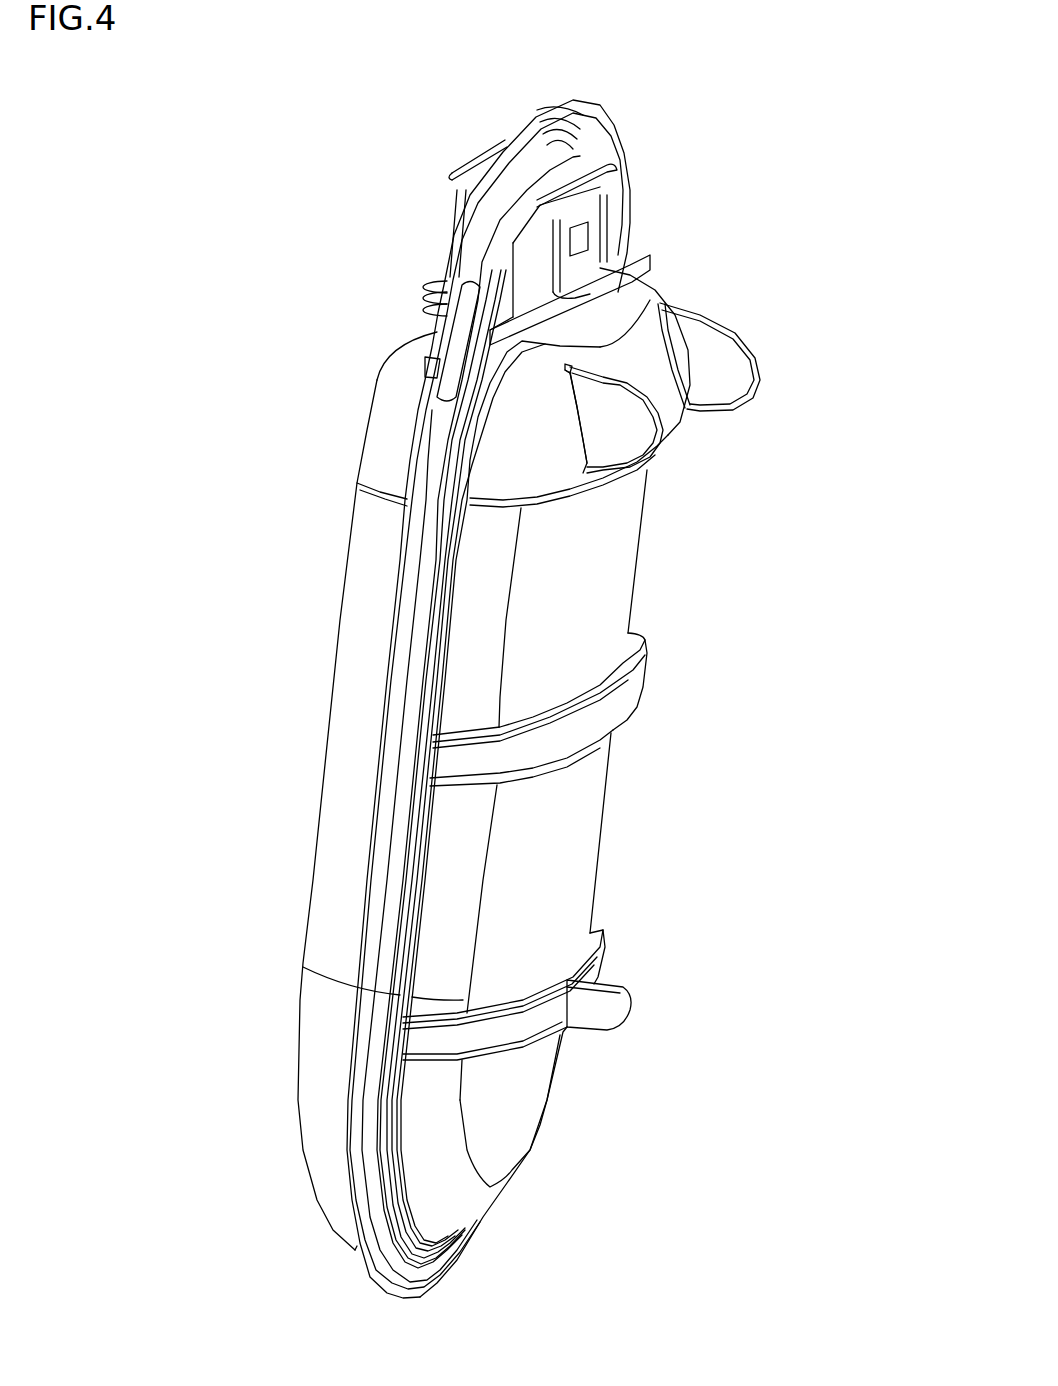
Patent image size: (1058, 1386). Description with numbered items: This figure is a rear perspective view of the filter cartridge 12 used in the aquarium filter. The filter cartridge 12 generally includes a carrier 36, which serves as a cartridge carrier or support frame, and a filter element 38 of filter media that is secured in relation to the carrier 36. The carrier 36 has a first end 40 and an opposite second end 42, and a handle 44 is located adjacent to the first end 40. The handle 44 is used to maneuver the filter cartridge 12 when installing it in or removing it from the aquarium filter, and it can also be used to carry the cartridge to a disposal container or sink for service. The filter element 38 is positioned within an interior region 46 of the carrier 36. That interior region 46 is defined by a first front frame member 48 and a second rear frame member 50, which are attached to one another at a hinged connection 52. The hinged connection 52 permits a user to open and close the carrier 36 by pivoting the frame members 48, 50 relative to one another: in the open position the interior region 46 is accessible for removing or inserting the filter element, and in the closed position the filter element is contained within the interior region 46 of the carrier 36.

The filter cartridge 12 is at (343, 258).
The carrier 36 is at (383, 384).
The filter element 38 is at (603, 560).
The first end 40 is at (472, 699).
The second end 42 is at (330, 1290).
The handle 44 is at (600, 127).
The interior region 46 is at (553, 957).
The first front frame member 48 is at (370, 458).
The second rear frame member 50 is at (765, 331).
The hinged connection 52 is at (433, 261).